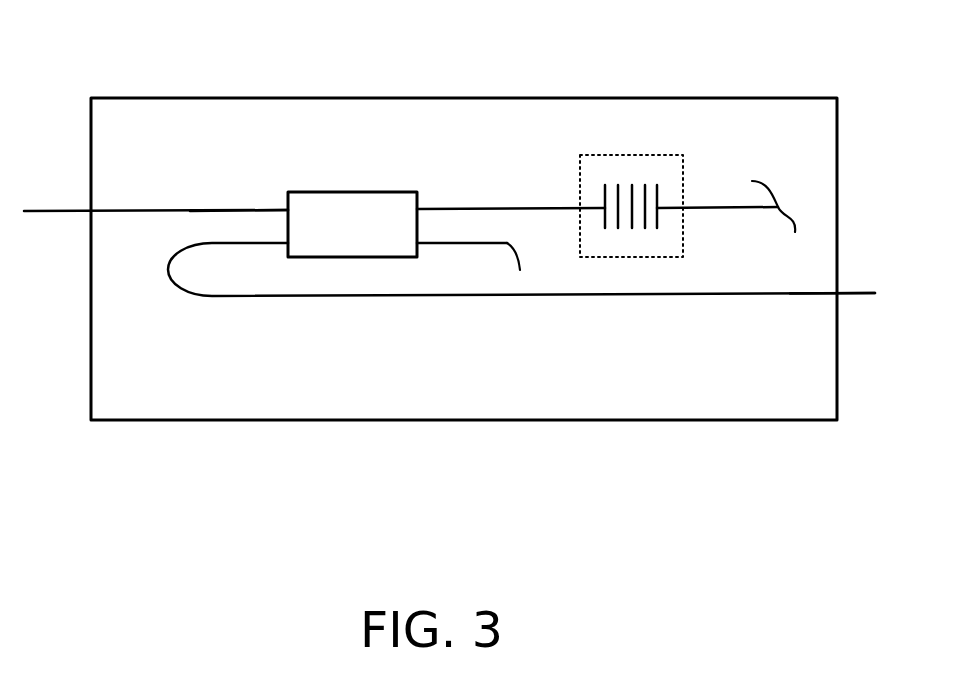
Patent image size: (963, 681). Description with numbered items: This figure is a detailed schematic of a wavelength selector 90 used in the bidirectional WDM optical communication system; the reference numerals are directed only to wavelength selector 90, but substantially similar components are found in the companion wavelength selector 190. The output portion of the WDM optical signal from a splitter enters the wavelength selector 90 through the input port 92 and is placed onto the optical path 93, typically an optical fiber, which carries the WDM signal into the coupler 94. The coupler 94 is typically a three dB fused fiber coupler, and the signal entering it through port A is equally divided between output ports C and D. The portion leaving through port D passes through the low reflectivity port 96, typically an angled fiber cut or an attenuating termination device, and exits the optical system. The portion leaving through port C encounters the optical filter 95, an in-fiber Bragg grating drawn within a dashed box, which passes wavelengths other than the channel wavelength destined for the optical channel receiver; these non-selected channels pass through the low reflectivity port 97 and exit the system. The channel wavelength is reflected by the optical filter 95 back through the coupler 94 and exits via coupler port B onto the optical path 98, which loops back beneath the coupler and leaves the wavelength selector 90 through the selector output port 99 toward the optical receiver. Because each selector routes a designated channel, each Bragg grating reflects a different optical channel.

The wavelength selector 90 is at (445, 83).
The wavelength selector 190 is at (464, 212).
The input port 92 is at (91, 210).
The optical path 93 is at (193, 210).
The coupler 94 is at (350, 205).
The optical filter 95 is at (636, 183).
The low reflectivity port 96 is at (482, 218).
The low reflectivity port 97 is at (779, 204).
The optical path 98 is at (312, 294).
The selector output port 99 is at (835, 296).